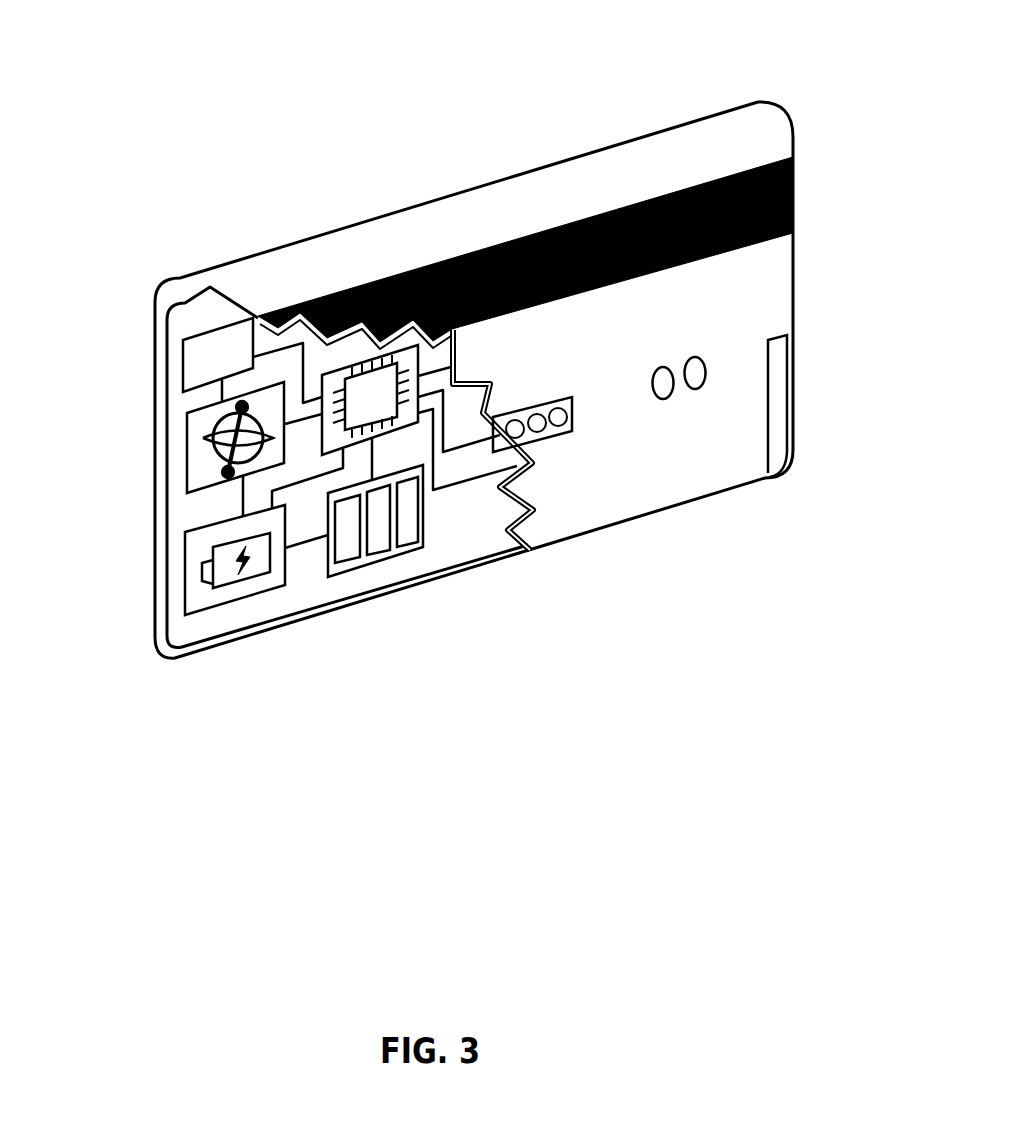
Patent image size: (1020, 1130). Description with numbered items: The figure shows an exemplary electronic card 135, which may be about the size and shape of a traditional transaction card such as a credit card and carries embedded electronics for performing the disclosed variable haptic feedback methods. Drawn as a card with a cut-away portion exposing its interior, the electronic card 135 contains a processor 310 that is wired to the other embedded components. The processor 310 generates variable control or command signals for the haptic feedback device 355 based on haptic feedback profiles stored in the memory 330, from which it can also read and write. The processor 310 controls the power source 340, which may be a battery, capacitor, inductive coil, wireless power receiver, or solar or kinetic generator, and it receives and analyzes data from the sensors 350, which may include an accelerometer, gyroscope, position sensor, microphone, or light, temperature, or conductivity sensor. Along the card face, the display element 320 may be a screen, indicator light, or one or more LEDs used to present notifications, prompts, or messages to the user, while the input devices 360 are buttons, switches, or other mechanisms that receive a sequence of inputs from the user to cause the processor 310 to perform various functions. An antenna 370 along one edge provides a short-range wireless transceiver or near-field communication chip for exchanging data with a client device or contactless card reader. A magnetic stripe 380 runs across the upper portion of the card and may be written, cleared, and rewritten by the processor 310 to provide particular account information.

The electronic card 135 is at (612, 84).
The processor 310 is at (352, 355).
The display element 320 is at (558, 430).
The memory 330 is at (345, 577).
The power source 340 is at (207, 618).
The sensors 350 is at (177, 456).
The haptic feedback device 355 is at (177, 352).
The input devices 360 is at (697, 353).
The antenna 370 is at (795, 404).
The magnetic stripe 380 is at (795, 178).